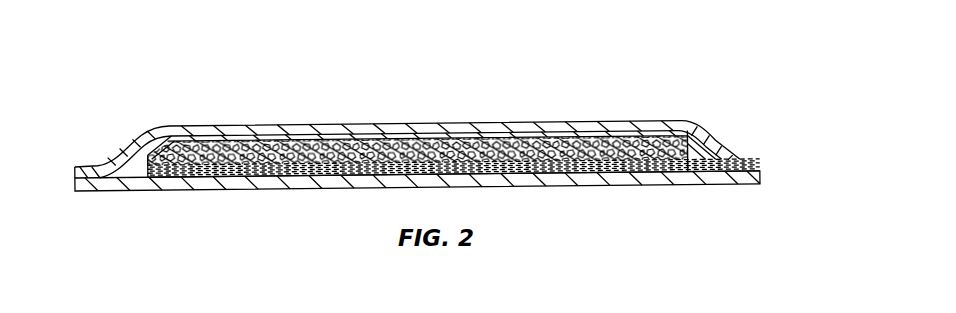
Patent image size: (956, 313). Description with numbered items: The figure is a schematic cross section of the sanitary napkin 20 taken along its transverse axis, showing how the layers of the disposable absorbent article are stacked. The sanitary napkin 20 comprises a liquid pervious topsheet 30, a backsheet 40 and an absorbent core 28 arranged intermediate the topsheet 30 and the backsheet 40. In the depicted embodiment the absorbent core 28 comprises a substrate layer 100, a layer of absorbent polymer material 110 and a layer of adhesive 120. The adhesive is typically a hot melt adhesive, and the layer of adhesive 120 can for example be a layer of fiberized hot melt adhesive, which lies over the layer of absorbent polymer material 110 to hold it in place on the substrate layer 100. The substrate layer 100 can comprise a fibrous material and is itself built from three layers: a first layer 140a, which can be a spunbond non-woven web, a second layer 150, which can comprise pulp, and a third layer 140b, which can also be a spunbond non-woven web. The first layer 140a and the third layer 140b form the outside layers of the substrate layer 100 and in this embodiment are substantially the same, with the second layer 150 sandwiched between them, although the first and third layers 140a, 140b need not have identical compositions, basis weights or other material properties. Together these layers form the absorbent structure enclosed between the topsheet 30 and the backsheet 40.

The sanitary napkin 20 is at (613, 65).
The absorbent core 28 is at (696, 126).
The liquid pervious topsheet 30 is at (560, 128).
The backsheet 40 is at (659, 186).
The substrate layer 100 is at (141, 170).
The layer of absorbent polymer material 110 is at (412, 130).
The layer of adhesive 120 is at (309, 129).
The first layer 140a is at (712, 143).
The third layer 140b is at (712, 186).
The second layer 150 is at (712, 155).